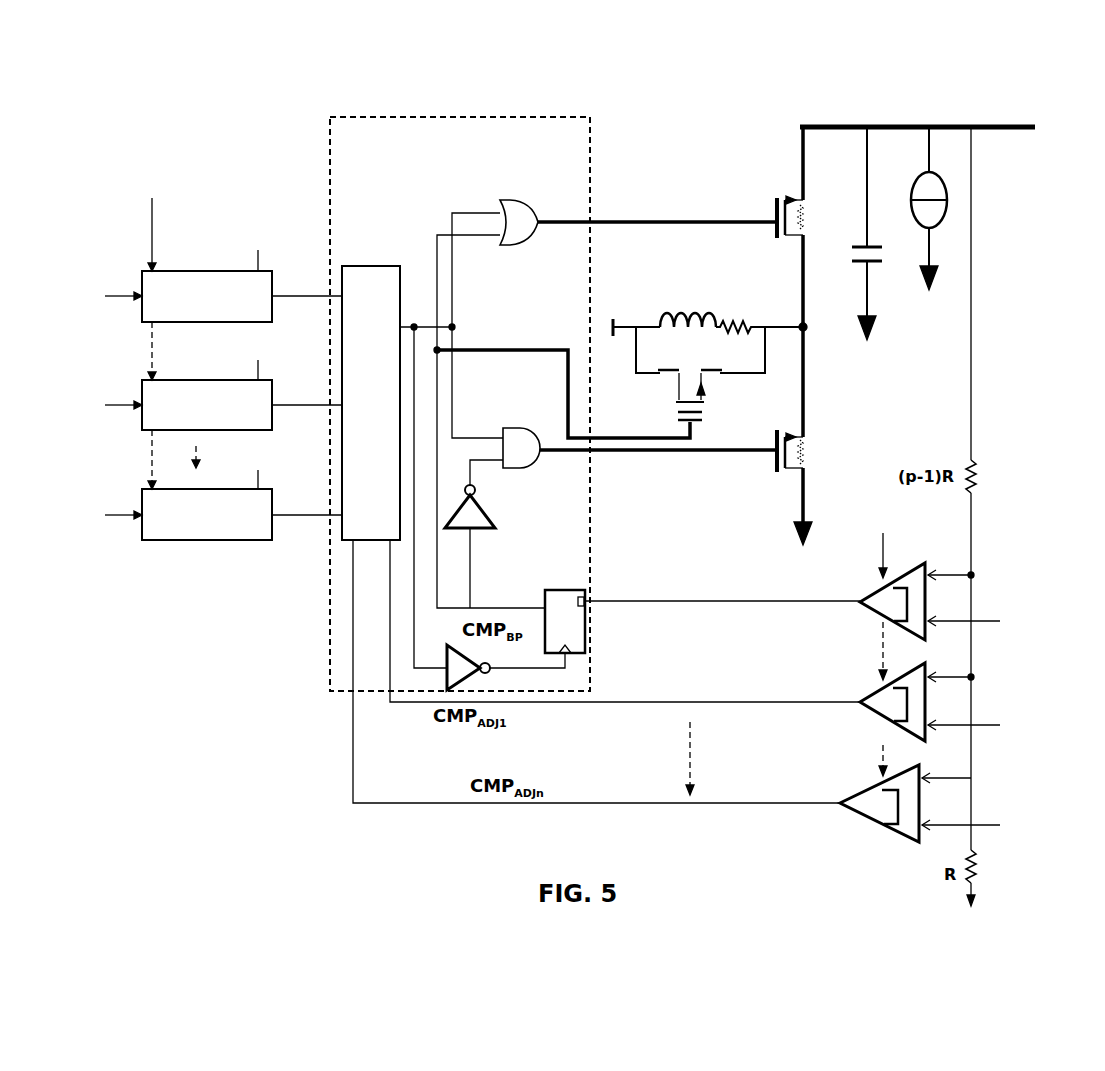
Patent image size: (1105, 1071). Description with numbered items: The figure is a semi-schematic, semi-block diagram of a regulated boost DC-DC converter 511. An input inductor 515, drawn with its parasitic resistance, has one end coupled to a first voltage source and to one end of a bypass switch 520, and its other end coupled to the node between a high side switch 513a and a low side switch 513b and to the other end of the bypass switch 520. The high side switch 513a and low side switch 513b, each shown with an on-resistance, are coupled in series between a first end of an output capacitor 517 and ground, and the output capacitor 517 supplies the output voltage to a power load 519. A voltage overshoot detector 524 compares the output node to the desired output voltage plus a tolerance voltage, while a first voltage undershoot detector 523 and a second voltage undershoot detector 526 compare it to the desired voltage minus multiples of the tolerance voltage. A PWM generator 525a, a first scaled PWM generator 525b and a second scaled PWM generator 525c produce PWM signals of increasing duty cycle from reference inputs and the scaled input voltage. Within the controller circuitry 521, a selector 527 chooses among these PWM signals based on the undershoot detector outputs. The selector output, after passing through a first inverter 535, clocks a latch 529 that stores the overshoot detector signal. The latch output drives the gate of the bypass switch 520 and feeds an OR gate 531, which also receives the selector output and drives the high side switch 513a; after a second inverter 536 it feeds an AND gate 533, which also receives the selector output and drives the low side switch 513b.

The converter 511 is at (670, 146).
The high side switch 513a is at (781, 198).
The low side switch 513b is at (782, 474).
The input inductor 515 is at (688, 308).
The output capacitor 517 is at (856, 265).
The power load 519 is at (939, 178).
The bypass switch 520 is at (698, 430).
The controller circuitry 521 is at (330, 693).
The first voltage undershoot detector 523 is at (869, 688).
The voltage overshoot detector 524 is at (869, 587).
The PWM generator 525a is at (166, 271).
The first scaled PWM generator 525b is at (166, 380).
The second scaled PWM generator 525c is at (142, 489).
The second voltage undershoot detector 526 is at (862, 790).
The selector 527 is at (366, 266).
The latch 529 is at (560, 590).
The OR gate 531 is at (518, 203).
The AND gate 533 is at (515, 428).
The first inverter 535 is at (478, 664).
The second inverter 536 is at (488, 518).